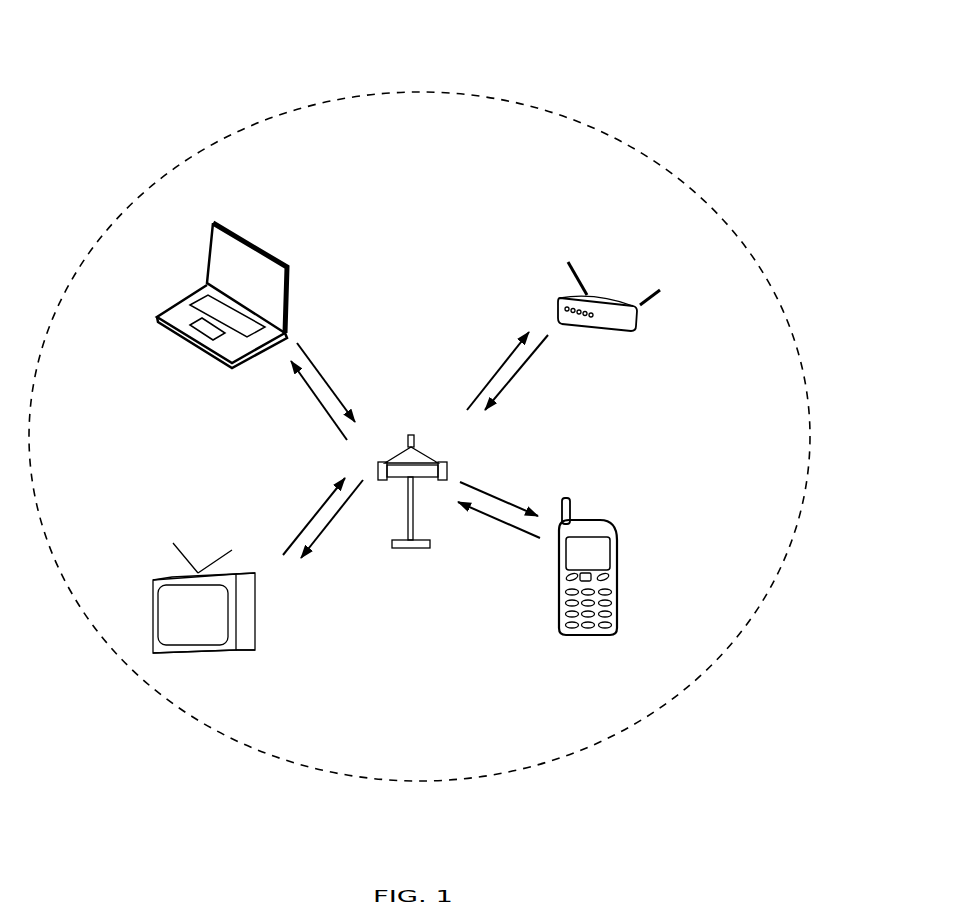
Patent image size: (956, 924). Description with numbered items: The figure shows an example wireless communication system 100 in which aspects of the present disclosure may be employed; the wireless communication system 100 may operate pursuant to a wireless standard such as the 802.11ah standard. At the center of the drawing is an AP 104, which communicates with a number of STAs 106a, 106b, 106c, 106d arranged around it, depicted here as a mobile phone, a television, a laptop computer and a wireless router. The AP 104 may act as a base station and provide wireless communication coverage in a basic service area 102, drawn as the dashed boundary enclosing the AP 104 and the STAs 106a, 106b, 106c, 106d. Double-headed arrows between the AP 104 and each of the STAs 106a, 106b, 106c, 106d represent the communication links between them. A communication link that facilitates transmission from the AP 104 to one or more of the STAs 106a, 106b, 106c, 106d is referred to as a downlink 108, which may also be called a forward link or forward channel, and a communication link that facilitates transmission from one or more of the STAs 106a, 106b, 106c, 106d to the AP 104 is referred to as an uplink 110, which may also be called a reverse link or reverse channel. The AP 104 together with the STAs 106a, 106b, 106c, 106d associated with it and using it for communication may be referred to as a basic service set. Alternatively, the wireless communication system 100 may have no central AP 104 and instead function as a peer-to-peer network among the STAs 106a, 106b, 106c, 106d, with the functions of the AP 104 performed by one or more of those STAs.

The wireless communication system 100 is at (672, 68).
The basic service area 102 is at (748, 252).
The AP 104 is at (411, 432).
The STA 106a is at (595, 520).
The STA 106b is at (248, 575).
The STA 106c is at (218, 225).
The STA 106d is at (620, 302).
The downlink 108 is at (487, 493).
The uplink 110 is at (463, 507).